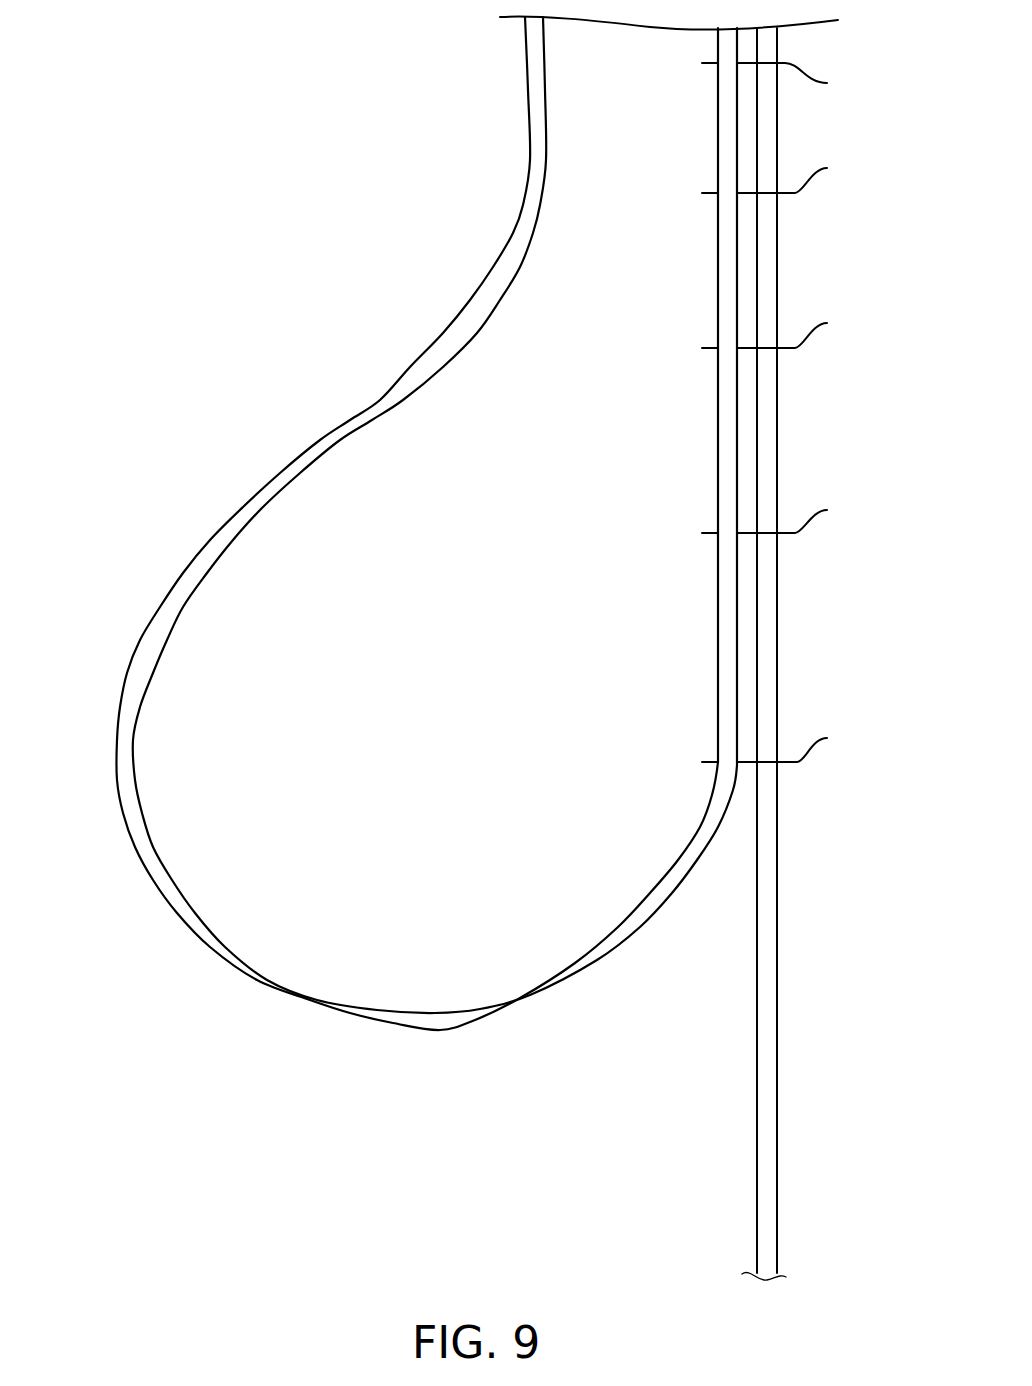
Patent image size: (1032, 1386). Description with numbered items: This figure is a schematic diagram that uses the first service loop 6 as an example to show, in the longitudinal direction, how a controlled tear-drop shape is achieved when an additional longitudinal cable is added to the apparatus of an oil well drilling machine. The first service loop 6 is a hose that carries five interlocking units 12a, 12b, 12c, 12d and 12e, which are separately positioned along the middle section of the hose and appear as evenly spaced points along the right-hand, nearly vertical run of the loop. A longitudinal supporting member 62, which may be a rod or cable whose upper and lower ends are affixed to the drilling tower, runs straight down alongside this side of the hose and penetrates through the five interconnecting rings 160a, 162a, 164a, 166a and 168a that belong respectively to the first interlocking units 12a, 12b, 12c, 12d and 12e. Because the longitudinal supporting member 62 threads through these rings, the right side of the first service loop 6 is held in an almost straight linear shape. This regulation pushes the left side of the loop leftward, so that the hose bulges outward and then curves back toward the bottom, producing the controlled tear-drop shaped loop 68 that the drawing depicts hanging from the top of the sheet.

The first service loop 6 is at (328, 447).
The controlled tear-drop shaped loop 68 is at (447, 649).
The longitudinal supporting member 62 is at (772, 938).
The first interlocking unit 12a is at (691, 87).
The first interlocking unit 12b is at (692, 215).
The first interlocking unit 12c is at (692, 370).
The first interlocking unit 12d is at (692, 555).
The first interlocking unit 12e is at (678, 781).
The interconnecting ring 160a is at (823, 82).
The interconnecting ring 162a is at (823, 171).
The interconnecting ring 164a is at (823, 326).
The interconnecting ring 166a is at (823, 512).
The interconnecting ring 168a is at (823, 740).